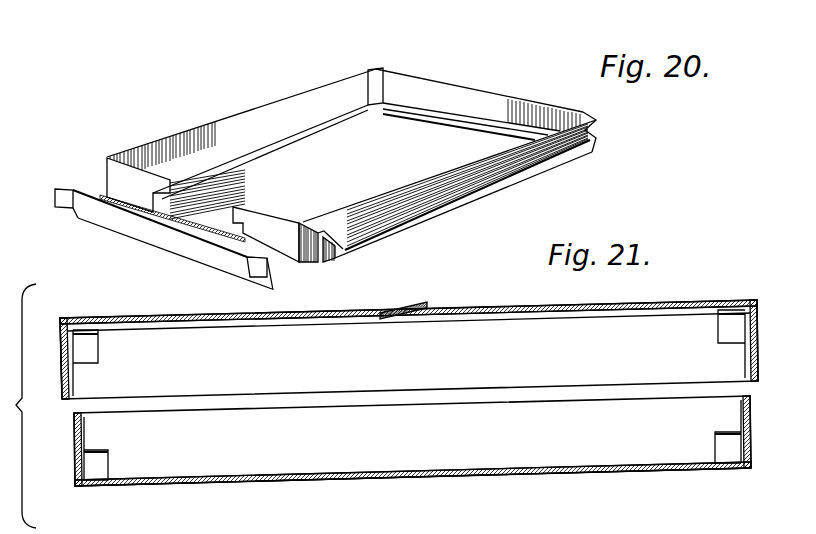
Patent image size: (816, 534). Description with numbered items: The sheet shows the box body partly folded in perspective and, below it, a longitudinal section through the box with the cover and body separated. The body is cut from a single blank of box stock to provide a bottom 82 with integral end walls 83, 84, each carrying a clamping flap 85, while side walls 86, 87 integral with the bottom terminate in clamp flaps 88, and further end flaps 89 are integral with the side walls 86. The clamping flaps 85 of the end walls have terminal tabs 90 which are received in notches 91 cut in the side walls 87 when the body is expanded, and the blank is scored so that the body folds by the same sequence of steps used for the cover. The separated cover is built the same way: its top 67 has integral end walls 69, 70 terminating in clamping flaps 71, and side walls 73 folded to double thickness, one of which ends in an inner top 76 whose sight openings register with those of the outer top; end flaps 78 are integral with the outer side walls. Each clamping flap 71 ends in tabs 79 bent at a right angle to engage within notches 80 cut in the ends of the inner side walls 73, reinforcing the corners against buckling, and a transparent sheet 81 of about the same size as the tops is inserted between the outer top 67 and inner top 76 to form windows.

In FIG. 21, the top 67 is at (423, 312).
In FIG. 21, the end wall 69 is at (62, 357).
In FIG. 21, the end wall 70 is at (74, 381).
In FIG. 21, the clamping flap 71 is at (95, 318).
In FIG. 21, the side wall 73 is at (497, 328).
In FIG. 21, the inner top 76 is at (413, 312).
In FIG. 21, the end flap 78 is at (61, 330).
In FIG. 21, the tab 79 is at (81, 340).
In FIG. 21, the notch 80 is at (99, 352).
In FIG. 21, the transparent sheet 81 is at (352, 317).
In FIG. 20, the bottom 82 is at (297, 180).
In FIG. 21, the bottom 82 is at (698, 470).
In FIG. 20, the end wall 83 is at (283, 268).
In FIG. 21, the end wall 83 is at (74, 425).
In FIG. 20, the end wall 84 is at (487, 103).
In FIG. 21, the end wall 84 is at (84, 437).
In FIG. 20, the clamping flap 85 is at (500, 137).
In FIG. 21, the clamping flap 85 is at (100, 487).
In FIG. 20, the side wall 86 is at (322, 250).
In FIG. 20, the side wall 87 is at (240, 137).
In FIG. 21, the side wall 87 is at (603, 447).
In FIG. 20, the clamp flap 88 is at (128, 178).
In FIG. 21, the clamp flap 88 is at (74, 441).
In FIG. 20, the lower flange 89 is at (315, 128).
In FIG. 20, the terminal tab 90 is at (377, 95).
In FIG. 21, the terminal tab 90 is at (108, 465).
In FIG. 20, the notch 91 is at (378, 84).
In FIG. 21, the notch 91 is at (97, 448).